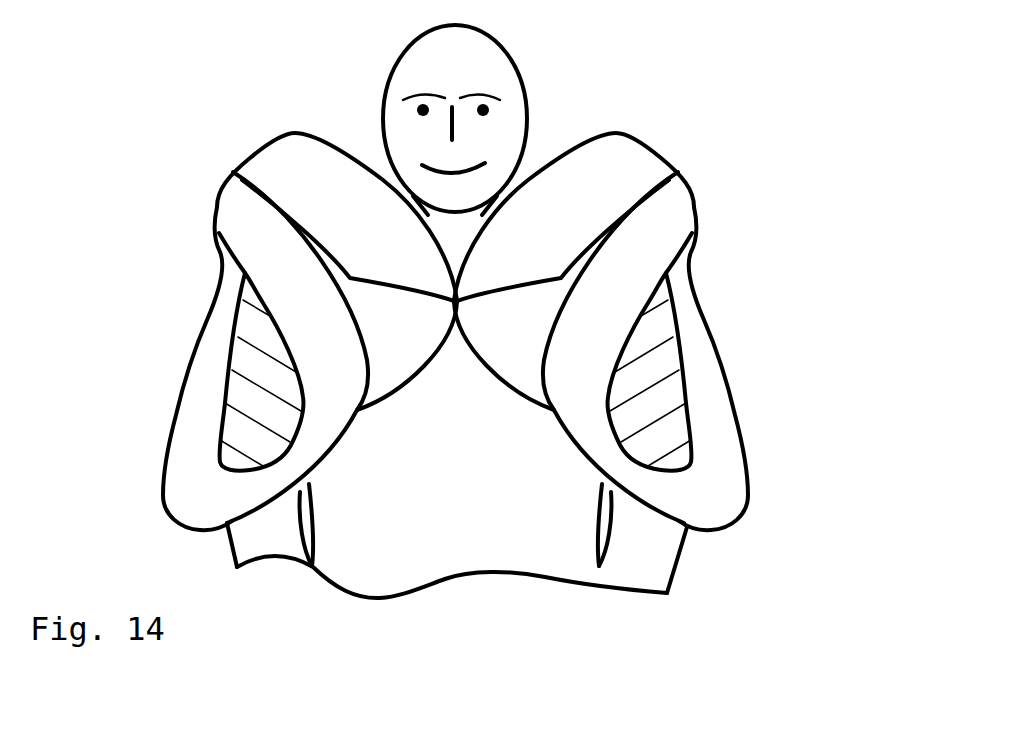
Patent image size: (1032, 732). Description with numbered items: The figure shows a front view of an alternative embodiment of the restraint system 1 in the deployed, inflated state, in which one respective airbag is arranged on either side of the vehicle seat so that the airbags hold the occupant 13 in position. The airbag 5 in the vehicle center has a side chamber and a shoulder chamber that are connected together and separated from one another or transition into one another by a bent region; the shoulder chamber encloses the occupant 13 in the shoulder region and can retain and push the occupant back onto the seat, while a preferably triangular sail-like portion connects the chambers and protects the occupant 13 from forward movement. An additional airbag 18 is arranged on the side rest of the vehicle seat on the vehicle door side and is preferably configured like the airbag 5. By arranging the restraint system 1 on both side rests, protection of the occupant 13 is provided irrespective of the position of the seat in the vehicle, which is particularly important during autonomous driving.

The restraint system 1 is at (815, 70).
The airbag 5 is at (753, 318).
The occupant 13 is at (470, 489).
The additional airbag 18 is at (197, 290).